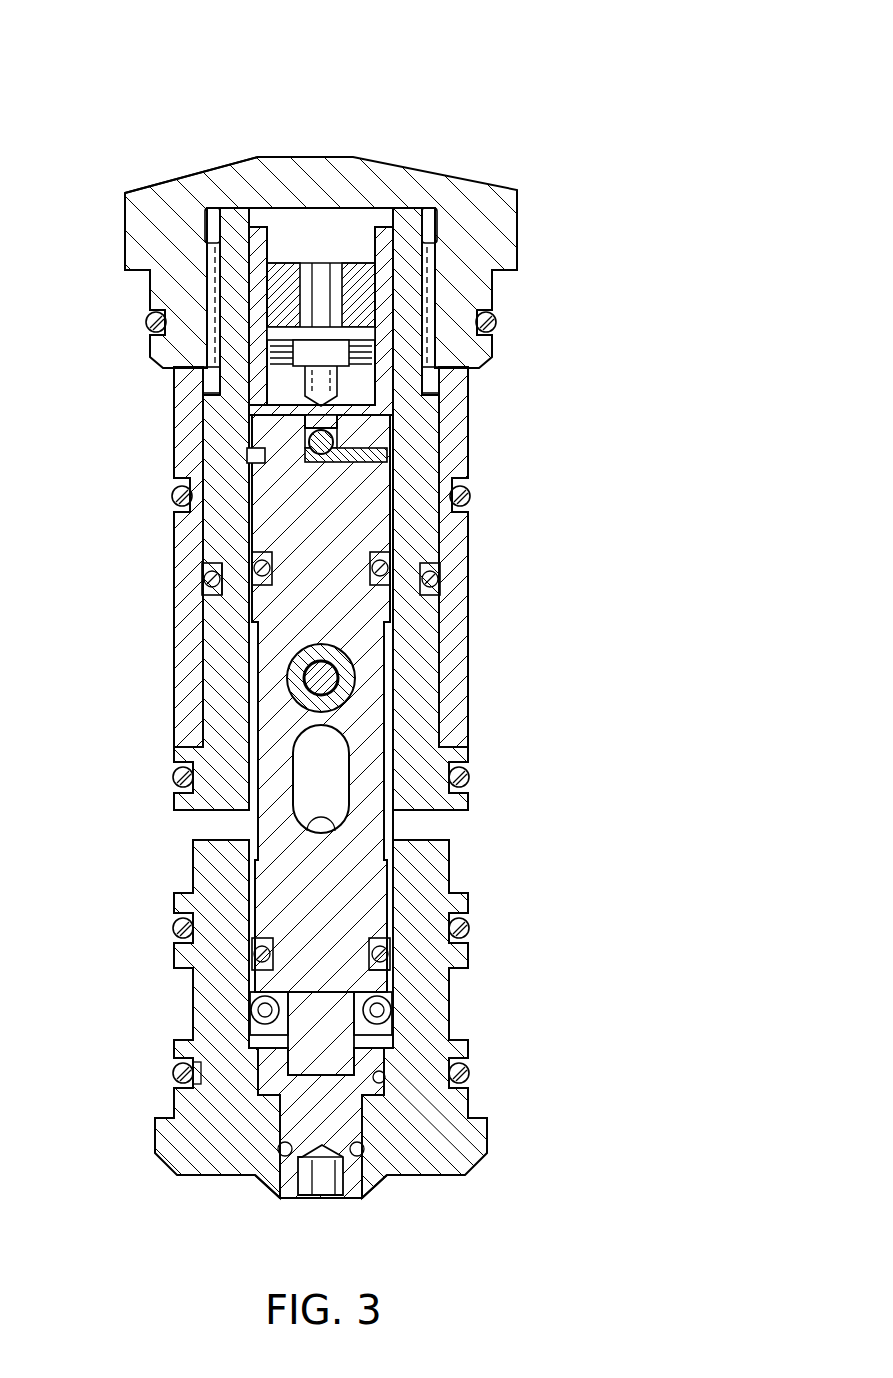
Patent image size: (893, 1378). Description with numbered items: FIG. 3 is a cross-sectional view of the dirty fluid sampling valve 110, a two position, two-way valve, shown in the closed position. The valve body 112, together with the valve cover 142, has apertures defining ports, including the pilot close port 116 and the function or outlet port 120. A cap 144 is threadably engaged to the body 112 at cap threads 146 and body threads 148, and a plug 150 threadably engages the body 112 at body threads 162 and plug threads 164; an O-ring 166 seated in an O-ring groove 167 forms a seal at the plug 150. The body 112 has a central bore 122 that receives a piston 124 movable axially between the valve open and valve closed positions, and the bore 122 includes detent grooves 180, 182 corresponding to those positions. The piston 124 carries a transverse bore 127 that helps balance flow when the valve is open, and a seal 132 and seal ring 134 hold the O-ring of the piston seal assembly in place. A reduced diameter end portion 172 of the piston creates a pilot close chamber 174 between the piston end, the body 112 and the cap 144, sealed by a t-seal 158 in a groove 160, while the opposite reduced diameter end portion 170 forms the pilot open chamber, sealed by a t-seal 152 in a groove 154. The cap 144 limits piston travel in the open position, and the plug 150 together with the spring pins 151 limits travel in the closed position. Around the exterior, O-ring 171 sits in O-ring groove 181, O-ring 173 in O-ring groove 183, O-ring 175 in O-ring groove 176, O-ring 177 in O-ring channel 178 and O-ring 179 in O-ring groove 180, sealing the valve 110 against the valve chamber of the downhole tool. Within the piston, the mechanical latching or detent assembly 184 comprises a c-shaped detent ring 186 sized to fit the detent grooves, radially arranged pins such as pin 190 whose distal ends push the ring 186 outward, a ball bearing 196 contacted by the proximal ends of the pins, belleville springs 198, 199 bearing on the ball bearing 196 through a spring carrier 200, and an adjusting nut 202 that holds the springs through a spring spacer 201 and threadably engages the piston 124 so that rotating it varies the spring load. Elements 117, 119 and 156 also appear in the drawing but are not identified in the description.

The dirty fluid sampling valve 110 is at (492, 95).
The valve body 112 is at (432, 874).
The pilot close port 116 is at (454, 395).
The seal 117 is at (212, 576).
The backup ring 119 is at (225, 582).
The function or outlet port 120 is at (438, 823).
The central bore 122 is at (243, 190).
The piston 124 is at (358, 518).
The transverse bore 127 is at (343, 752).
The seal 132 is at (340, 686).
The seal ring 134 is at (352, 664).
The valve cover 142 is at (176, 520).
The cap 144 is at (517, 218).
The cap threads 146 is at (472, 266).
The body threads 148 is at (402, 203).
The plug 150 is at (352, 1120).
The spring pins 151 is at (262, 1013).
The t-seal 152 is at (386, 956).
The groove 154 is at (362, 975).
The sleeve 156 is at (252, 662).
The t-seal 158 is at (432, 579).
The groove 160 is at (381, 556).
The body threads 162 is at (387, 1068).
The plug threads 164 is at (384, 1078).
The O-ring 166 is at (362, 1155).
The O-ring groove 167 is at (334, 1162).
The reduced diameter end portion 170 is at (332, 1072).
The O-ring 171 is at (494, 323).
The reduced diameter end portion 172 is at (378, 240).
The O-ring 173 is at (466, 492).
The pilot close chamber 174 is at (282, 262).
The O-ring 175 is at (183, 781).
The O-ring groove 176 is at (200, 748).
The O-ring 177 is at (183, 932).
The O-ring channel 178 is at (193, 900).
The O-ring 179 is at (183, 1076).
The detent groove 180 is at (210, 380).
The O-ring groove 181 is at (486, 312).
The detent groove 182 is at (250, 456).
The O-ring groove 183 is at (464, 500).
The mechanical latching or detent assembly 184 is at (336, 250).
The c-shaped detent ring 186 is at (492, 447).
The pin 190 is at (362, 455).
The ball bearing 196 is at (333, 436).
The belleville spring 198 is at (273, 330).
The belleville spring 199 is at (434, 368).
The spring carrier 200 is at (268, 402).
The spring spacer 201 is at (216, 313).
The adjusting nut 202 is at (212, 242).